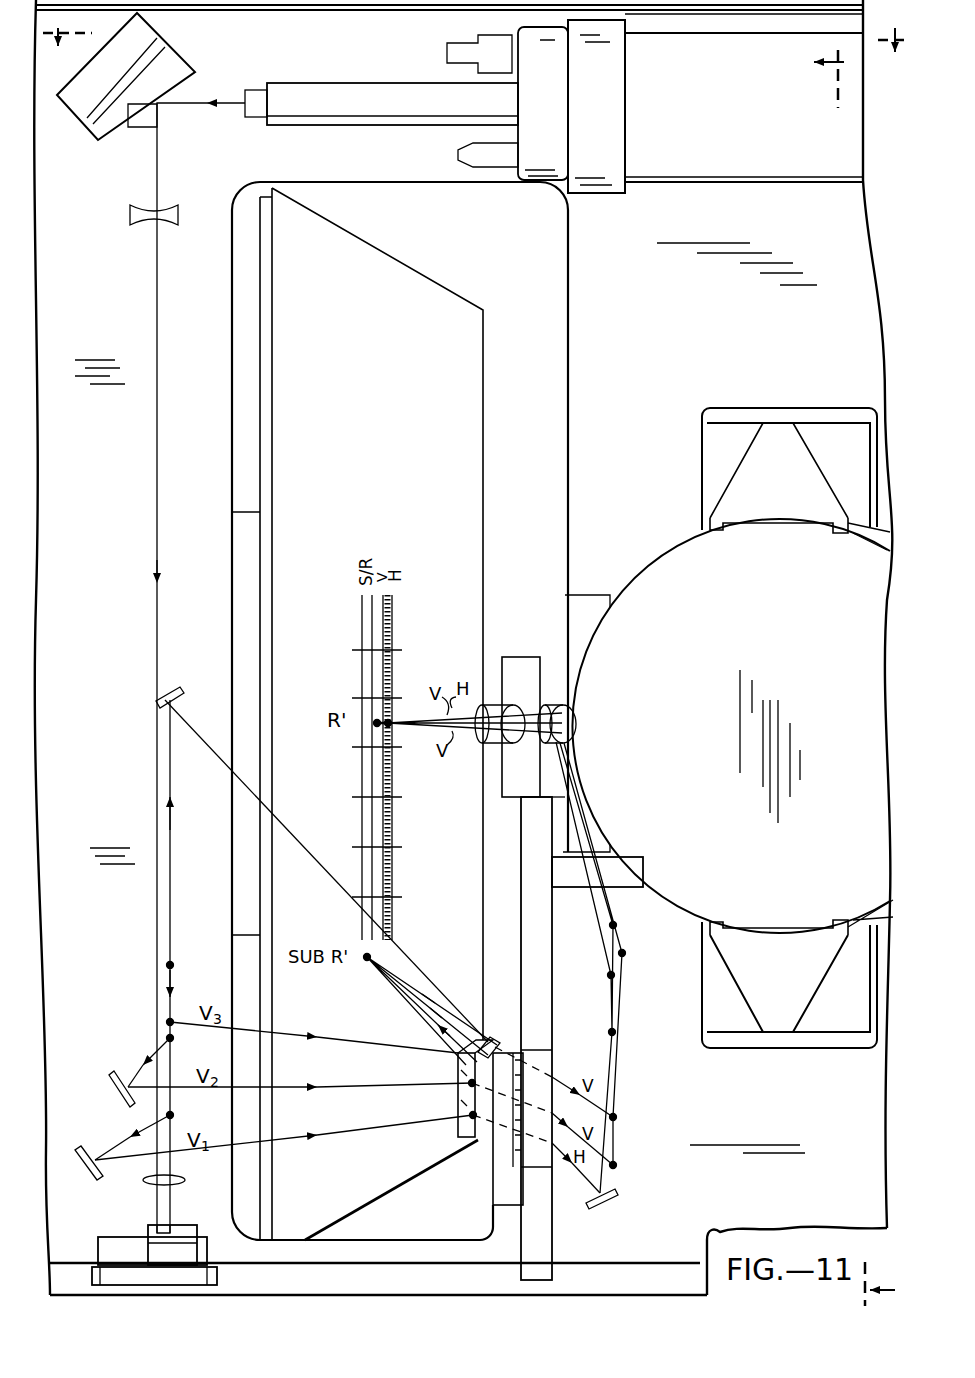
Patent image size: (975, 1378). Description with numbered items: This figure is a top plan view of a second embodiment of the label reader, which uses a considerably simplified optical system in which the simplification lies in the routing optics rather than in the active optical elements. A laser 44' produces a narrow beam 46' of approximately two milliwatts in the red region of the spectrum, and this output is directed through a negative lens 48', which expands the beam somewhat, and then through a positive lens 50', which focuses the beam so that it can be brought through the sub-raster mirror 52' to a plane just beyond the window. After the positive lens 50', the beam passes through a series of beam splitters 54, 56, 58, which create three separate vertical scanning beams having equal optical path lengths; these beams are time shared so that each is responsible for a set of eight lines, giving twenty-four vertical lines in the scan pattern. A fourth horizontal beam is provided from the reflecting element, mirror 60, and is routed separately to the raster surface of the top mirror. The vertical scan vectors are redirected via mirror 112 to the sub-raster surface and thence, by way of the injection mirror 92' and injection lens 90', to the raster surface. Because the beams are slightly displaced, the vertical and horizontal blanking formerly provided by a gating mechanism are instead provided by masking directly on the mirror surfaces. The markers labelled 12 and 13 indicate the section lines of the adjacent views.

The section line 12- 12 is at (476, 29).
The section line 13- 13 is at (856, 678).
The laser 44' is at (554, 103).
The narrow beam 46' is at (126, 95).
The negative lens 48' is at (130, 233).
The positive lens 50' is at (137, 1192).
The sub-raster mirror 52' is at (160, 1234).
The beam splitter 54 is at (92, 1145).
The beam splitter 56 is at (125, 1068).
The beam splitter 58 is at (165, 967).
The mirror 60 is at (170, 688).
The injection lens 90' is at (520, 705).
The injection mirror 92' is at (568, 723).
The mirror 112 is at (458, 1125).